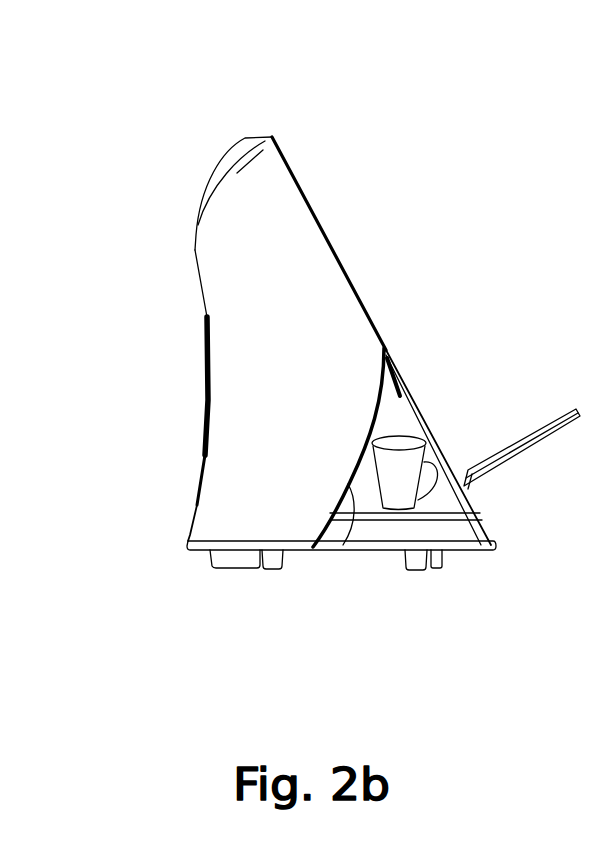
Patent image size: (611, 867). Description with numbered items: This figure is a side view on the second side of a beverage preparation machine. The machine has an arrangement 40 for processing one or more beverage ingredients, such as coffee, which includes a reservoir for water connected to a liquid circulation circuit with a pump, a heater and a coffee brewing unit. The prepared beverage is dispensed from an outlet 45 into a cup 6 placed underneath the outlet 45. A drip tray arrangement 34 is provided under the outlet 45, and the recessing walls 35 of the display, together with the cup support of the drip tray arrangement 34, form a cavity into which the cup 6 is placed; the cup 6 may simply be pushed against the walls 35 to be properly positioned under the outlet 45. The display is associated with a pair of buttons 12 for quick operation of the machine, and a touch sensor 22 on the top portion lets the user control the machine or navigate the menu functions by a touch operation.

The buttons 12 is at (348, 273).
The touch sensor 22 is at (245, 137).
The arrangement for processing beverage ingredients 40 is at (300, 382).
The outlet 45 is at (383, 415).
The cup 6 is at (403, 502).
The walls 35 is at (343, 547).
The drip tray arrangement 34 is at (450, 533).